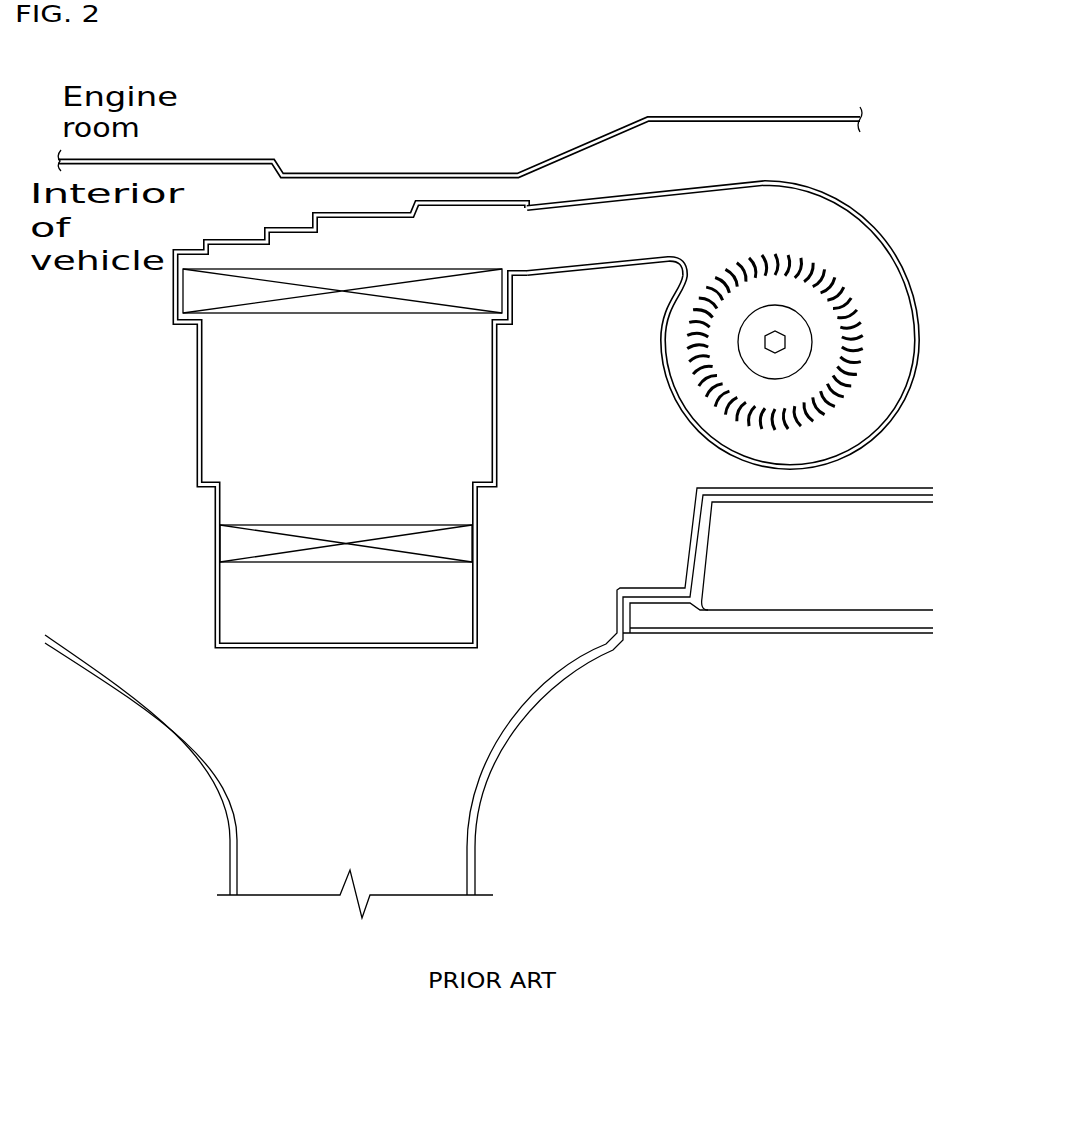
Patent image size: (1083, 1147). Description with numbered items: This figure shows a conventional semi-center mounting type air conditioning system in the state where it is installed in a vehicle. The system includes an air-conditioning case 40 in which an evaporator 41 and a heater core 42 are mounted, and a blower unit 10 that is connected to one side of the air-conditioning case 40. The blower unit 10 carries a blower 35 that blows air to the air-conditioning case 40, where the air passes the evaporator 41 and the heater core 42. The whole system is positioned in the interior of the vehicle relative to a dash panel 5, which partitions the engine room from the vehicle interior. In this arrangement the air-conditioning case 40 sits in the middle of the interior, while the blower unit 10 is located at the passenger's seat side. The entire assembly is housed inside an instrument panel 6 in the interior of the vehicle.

The dash panel 5 is at (211, 160).
The blower unit 10 is at (862, 193).
The blower 35 is at (693, 345).
The air-conditioning case 40 is at (197, 408).
The evaporator 41 is at (200, 292).
The heater core 42 is at (237, 546).
The instrument panel 6 is at (520, 723).